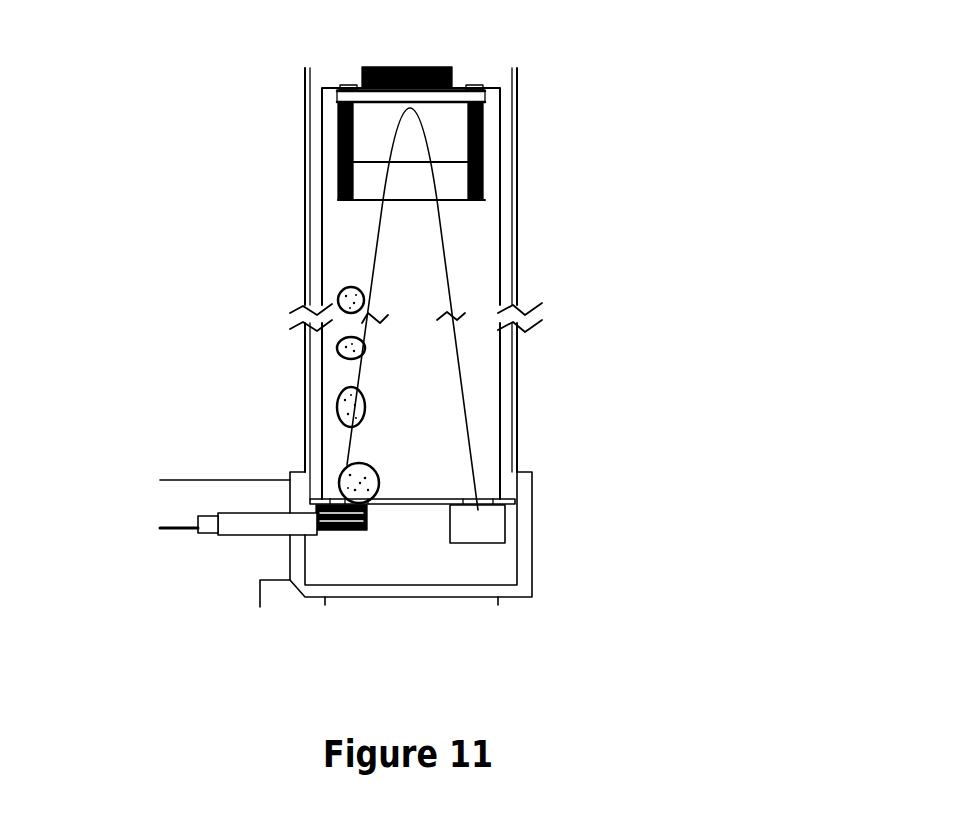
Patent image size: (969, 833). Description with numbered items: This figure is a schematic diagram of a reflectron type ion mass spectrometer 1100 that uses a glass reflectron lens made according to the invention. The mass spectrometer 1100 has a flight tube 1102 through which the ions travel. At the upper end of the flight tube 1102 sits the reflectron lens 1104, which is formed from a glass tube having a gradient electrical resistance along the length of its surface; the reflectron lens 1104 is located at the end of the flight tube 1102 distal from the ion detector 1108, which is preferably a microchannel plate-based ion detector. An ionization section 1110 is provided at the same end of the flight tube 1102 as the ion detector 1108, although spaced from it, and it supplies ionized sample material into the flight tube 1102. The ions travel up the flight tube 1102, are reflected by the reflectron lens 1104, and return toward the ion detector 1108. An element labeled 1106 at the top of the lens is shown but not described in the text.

The ion mass spectrometer 1100 is at (566, 645).
The flight tube 1102 is at (538, 179).
The reflectron lens 1104 is at (337, 153).
The top cap / sample inlet block 1106 is at (331, 68).
The ion detector 1108 is at (500, 522).
The ionization section 1110 is at (289, 537).